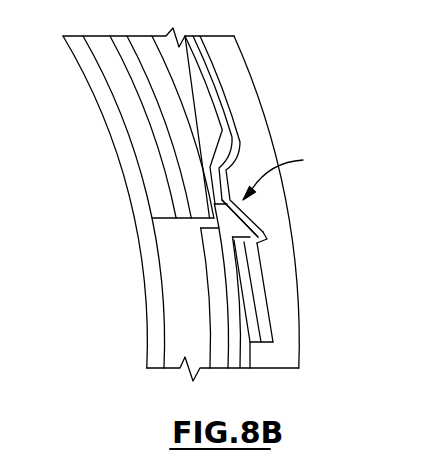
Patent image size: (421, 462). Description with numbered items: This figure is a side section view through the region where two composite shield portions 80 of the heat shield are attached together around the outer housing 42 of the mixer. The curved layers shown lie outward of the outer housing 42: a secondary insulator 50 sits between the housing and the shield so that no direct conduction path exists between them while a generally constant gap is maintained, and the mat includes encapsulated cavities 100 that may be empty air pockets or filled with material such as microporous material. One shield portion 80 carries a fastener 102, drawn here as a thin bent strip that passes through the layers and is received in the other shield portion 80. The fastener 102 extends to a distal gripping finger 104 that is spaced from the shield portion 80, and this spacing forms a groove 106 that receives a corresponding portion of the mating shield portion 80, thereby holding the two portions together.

The outer housing 42 is at (157, 346).
The secondary insulator 50 is at (152, 185).
The encapsulated cavities 100 is at (158, 130).
The composite shield portions 80 is at (228, 120).
The fasteners 102 is at (296, 174).
The groove 106 is at (237, 228).
The distal gripping finger 104 is at (262, 241).